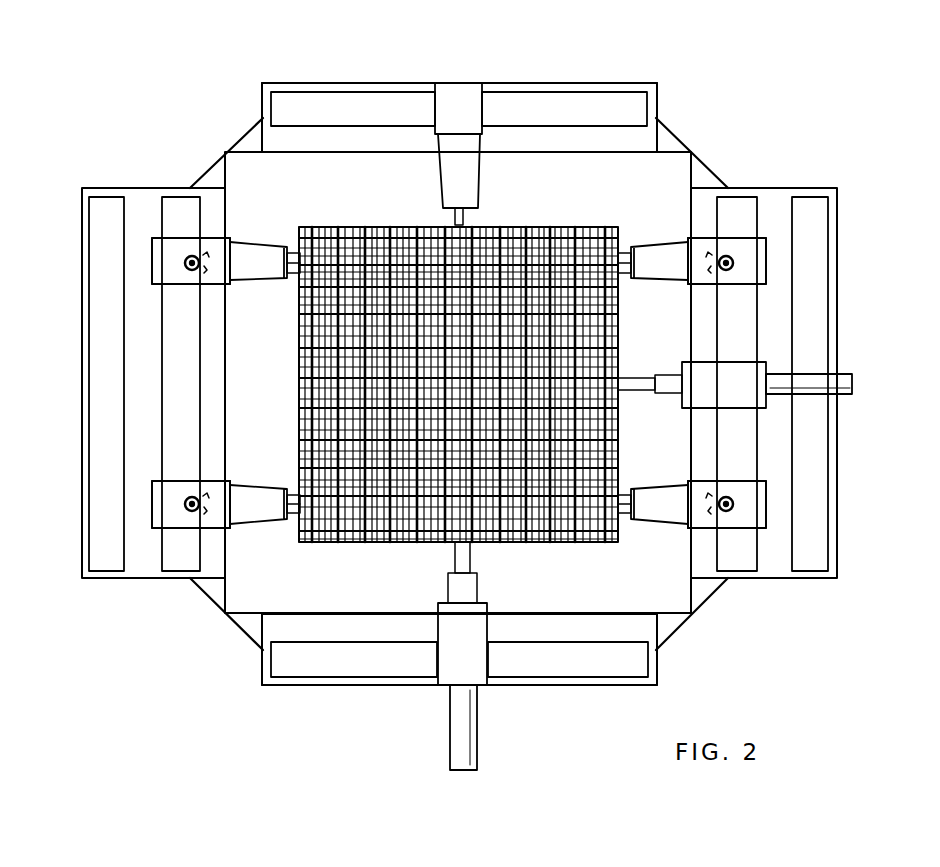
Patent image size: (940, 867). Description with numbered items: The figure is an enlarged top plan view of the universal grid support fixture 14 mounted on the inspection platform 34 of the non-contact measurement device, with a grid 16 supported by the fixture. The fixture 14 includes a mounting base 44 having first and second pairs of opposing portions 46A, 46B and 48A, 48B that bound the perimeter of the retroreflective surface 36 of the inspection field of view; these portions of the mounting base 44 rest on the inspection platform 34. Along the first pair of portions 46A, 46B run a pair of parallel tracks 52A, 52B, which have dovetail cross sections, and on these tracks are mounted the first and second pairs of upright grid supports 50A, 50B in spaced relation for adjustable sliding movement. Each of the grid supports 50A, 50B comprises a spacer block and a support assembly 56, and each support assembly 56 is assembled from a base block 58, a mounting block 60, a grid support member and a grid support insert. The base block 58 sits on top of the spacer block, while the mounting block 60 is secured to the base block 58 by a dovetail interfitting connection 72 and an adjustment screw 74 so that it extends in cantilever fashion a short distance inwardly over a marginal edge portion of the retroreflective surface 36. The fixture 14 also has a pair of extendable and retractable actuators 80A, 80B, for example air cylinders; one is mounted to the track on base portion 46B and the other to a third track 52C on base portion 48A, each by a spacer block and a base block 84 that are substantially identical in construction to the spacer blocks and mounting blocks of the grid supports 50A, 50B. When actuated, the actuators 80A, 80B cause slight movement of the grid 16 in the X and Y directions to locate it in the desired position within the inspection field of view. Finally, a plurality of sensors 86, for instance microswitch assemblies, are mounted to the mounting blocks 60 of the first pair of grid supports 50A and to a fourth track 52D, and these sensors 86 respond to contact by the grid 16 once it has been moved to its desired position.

The universal grid support fixture 14 is at (856, 196).
The grid 16 is at (413, 548).
The inspection platform 34 is at (690, 630).
The retroreflective surface 36 is at (663, 358).
The mounting base 44 is at (258, 100).
The opposing portion of the mounting base 46A is at (140, 390).
The opposing portion of the mounting base 46B is at (780, 530).
The opposing portion of the mounting base 48A is at (322, 633).
The opposing portion of the mounting base 48B is at (583, 137).
The upright grid supports 50A is at (212, 478).
The upright grid supports 50B is at (669, 291).
The track 52A is at (177, 365).
The track 52B is at (748, 430).
The third track 52C is at (602, 665).
The fourth track 52D is at (518, 97).
The support assembly 56 is at (181, 291).
The base block 58 is at (165, 268).
The mounting block 60 is at (238, 240).
The dovetail interfitting connection 72 is at (213, 250).
The adjustment screw 74 is at (192, 256).
The actuator 80A is at (478, 700).
The actuator 80B is at (812, 375).
The base block 84 is at (740, 372).
The sensors 86 is at (293, 253).